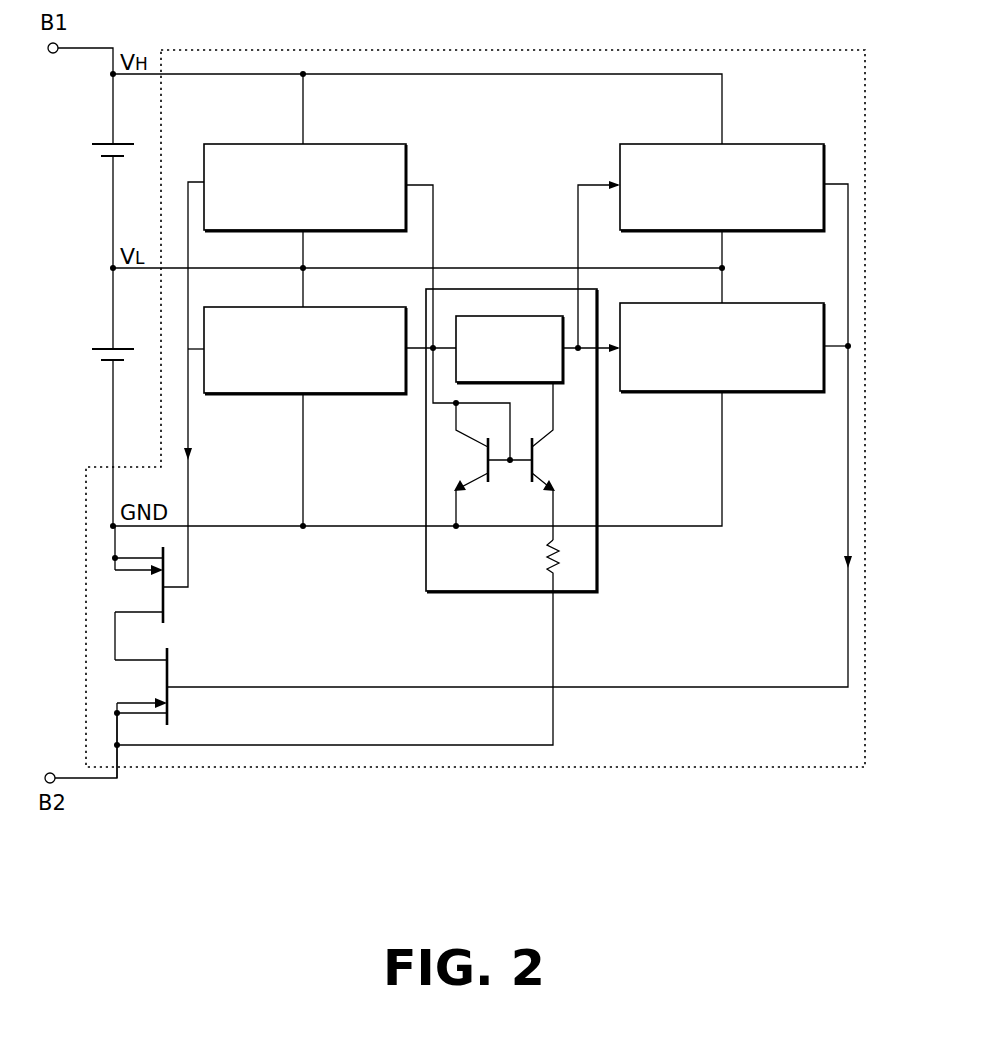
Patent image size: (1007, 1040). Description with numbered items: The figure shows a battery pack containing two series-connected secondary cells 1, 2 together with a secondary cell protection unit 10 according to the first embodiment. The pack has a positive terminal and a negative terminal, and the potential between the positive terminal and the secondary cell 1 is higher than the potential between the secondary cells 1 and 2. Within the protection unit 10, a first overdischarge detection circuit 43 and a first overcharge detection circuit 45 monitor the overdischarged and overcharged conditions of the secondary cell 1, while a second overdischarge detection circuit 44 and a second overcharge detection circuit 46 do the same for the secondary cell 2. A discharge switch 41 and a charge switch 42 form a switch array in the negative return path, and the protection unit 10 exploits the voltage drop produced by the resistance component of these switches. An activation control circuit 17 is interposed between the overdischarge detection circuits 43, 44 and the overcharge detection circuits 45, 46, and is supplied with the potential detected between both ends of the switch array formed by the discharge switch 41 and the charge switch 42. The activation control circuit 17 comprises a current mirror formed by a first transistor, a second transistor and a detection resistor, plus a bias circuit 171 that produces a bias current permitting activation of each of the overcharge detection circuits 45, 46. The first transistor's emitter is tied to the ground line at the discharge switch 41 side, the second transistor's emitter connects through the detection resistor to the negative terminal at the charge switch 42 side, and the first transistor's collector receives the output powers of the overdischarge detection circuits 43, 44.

The secondary cell 1 is at (108, 159).
The secondary cell 2 is at (104, 364).
The secondary cell protection unit 10 is at (603, 768).
The activation control circuit 17 is at (471, 477).
The bias circuit 171 is at (518, 316).
The discharge switch 41 is at (165, 596).
The charge switch 42 is at (169, 705).
The first overdischarge detection circuit 43 is at (380, 144).
The second overdischarge detection circuit 44 is at (372, 393).
The first overcharge detection circuit 45 is at (775, 144).
The second overcharge detection circuit 46 is at (783, 391).